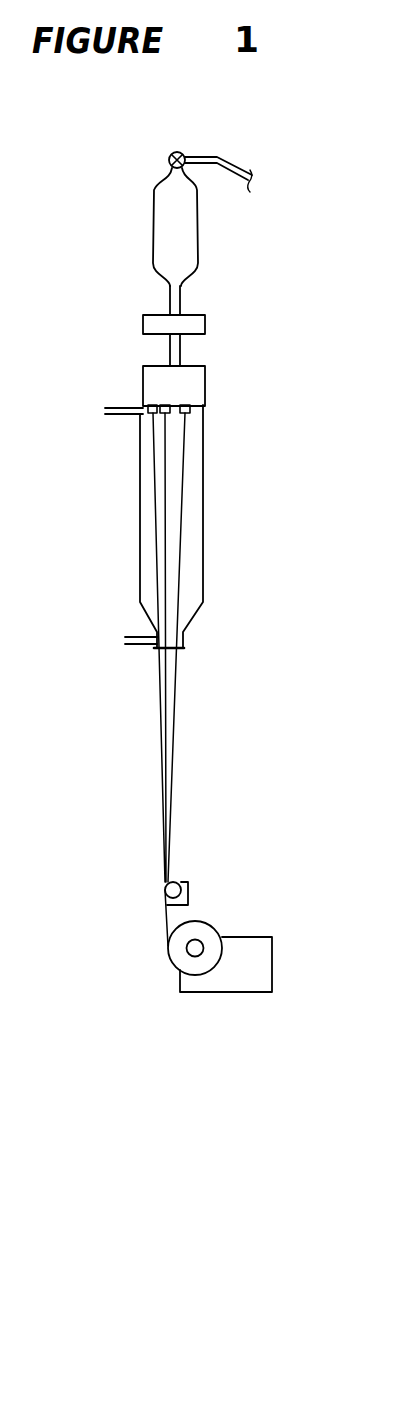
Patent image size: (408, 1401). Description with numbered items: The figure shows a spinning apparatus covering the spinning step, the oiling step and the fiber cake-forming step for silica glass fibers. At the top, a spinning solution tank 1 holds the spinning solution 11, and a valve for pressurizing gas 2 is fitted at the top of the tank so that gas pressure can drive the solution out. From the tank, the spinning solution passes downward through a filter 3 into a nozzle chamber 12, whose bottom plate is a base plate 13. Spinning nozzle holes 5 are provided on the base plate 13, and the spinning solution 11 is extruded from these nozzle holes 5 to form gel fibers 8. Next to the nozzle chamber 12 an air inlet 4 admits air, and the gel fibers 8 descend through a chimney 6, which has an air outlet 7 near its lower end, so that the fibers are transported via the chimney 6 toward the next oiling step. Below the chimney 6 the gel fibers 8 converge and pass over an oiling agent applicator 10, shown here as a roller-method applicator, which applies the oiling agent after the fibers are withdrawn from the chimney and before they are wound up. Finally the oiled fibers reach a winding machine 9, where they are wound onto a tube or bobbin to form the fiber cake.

The spinning solution tank 1 is at (180, 227).
The valve for pressurizing gas 2 is at (173, 151).
The filter 3 is at (205, 327).
The air inlet 4 is at (103, 410).
The nozzle 5 is at (150, 414).
The chimney 6 is at (203, 512).
The air outlet 7 is at (122, 640).
The gel fiber 8 is at (178, 553).
The winding machine 9 is at (220, 929).
The oiling agent applicator 10 is at (198, 877).
The spinning solution 11 is at (180, 222).
The nozzle chamber 12 is at (150, 383).
The base plate 13 is at (198, 404).